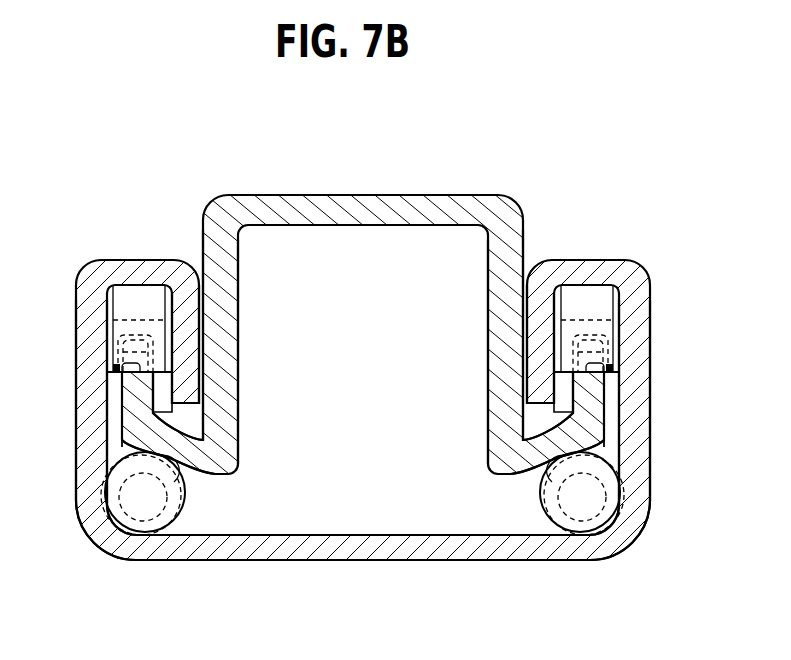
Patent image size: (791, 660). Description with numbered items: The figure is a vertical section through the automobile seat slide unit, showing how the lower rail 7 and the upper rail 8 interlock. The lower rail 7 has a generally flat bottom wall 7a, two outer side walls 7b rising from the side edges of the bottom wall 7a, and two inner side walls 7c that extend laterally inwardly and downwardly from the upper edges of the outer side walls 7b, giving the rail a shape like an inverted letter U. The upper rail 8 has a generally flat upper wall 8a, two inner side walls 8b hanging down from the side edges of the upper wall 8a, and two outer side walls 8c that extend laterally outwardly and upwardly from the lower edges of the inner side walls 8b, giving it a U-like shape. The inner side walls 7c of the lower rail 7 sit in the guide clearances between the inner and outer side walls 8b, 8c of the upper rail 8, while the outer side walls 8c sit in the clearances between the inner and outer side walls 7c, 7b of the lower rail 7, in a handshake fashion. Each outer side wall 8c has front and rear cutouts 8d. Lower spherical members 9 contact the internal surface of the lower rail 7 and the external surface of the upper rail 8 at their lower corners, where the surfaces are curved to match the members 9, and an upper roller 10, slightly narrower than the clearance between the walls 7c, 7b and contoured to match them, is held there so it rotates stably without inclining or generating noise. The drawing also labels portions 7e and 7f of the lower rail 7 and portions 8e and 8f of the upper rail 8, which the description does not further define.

The lower rail 7 is at (383, 550).
The bottom wall 7a is at (512, 550).
The outer side walls 7b is at (633, 470).
The inner side walls 7c is at (540, 293).
The top wall of housing pocket 7e is at (598, 290).
The corner portion of housing 7f is at (595, 533).
The upper rail 8 is at (338, 212).
The upper wall 8a is at (395, 212).
The inner side walls 8b is at (499, 412).
The outer side walls 8c is at (596, 398).
The front and rear cutouts 8d is at (610, 350).
The claw portion 8e is at (588, 368).
The end portion of side wall 8f is at (541, 480).
The lower spherical members 9 is at (592, 498).
The upper roller 10 is at (592, 322).